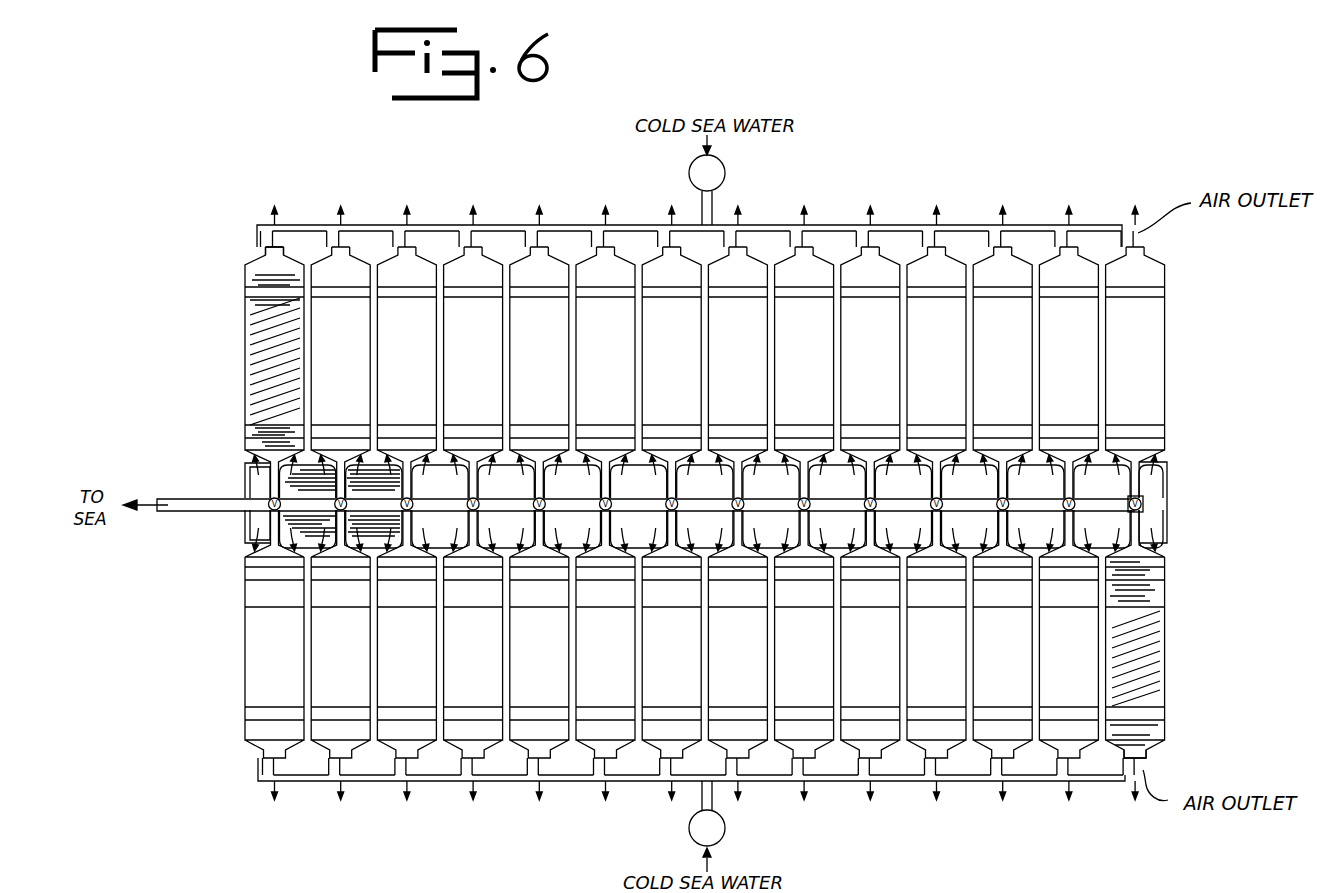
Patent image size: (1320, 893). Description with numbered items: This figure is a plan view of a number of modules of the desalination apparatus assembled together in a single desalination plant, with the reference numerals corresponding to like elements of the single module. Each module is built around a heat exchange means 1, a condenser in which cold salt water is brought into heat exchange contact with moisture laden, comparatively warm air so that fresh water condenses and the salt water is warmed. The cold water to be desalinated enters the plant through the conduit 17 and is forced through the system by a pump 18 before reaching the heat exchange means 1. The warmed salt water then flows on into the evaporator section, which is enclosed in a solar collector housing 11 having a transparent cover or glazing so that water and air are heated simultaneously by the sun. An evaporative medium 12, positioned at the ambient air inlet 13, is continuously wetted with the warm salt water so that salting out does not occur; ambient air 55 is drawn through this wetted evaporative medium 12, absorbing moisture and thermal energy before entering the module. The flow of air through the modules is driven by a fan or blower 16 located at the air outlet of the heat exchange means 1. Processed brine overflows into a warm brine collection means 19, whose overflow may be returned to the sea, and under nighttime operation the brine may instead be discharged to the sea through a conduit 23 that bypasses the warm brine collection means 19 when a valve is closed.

The heat exchange means 1 is at (251, 278).
The solar collector housing 11 is at (253, 337).
The evaporative medium 12 is at (251, 432).
The ambient air inlet 13 is at (250, 445).
The fan or blower 16 is at (263, 251).
The conduit 17 is at (257, 240).
The pump 18 is at (726, 168).
The warm brine collection means 19 is at (250, 527).
The conduit 23 is at (1143, 503).
The ambient air 55 is at (262, 471).